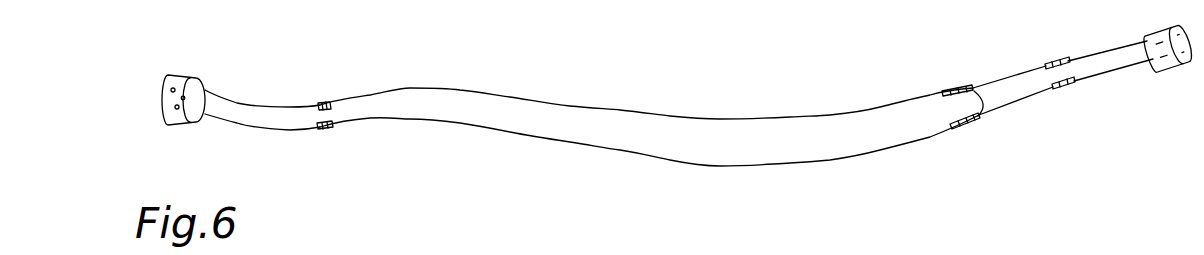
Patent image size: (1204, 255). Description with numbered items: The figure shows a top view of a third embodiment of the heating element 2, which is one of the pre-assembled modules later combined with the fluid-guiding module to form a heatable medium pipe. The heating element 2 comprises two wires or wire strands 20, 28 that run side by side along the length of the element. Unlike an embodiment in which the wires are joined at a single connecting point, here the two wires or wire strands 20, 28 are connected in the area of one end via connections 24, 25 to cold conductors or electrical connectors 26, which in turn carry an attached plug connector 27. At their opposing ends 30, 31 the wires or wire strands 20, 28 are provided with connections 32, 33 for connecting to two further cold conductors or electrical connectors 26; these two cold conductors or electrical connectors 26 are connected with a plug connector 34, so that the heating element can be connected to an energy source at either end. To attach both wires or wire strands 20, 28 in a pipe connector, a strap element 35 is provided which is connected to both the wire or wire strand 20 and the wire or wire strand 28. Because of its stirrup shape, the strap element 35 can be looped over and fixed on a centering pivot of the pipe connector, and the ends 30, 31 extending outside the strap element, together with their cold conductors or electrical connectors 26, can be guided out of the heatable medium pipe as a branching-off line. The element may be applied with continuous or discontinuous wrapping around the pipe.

The heating element 2 is at (698, 117).
The wire or wire strand 20 is at (598, 108).
The connection 24 is at (320, 102).
The connection 25 is at (323, 130).
The cold conductor or electrical connector 26 is at (253, 127).
The plug connector 27 is at (180, 76).
The wire or wire strand 28 is at (602, 148).
The end 30 is at (1038, 65).
The end 31 is at (1052, 97).
The connection 32 is at (1050, 63).
The connection 33 is at (1066, 90).
The plug connector 34 is at (1177, 70).
The strap element 35 is at (947, 86).